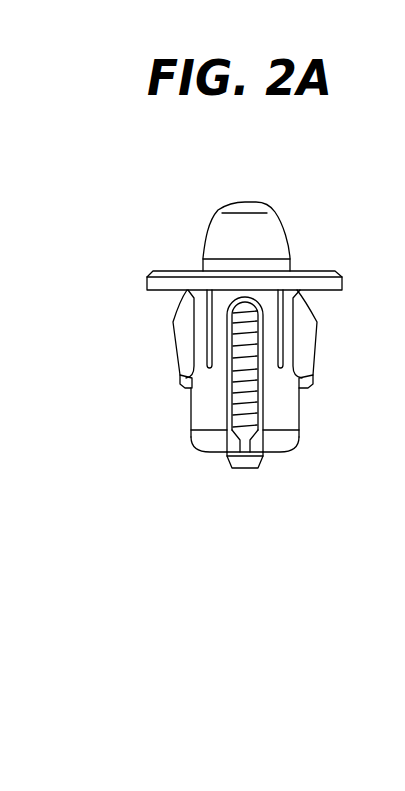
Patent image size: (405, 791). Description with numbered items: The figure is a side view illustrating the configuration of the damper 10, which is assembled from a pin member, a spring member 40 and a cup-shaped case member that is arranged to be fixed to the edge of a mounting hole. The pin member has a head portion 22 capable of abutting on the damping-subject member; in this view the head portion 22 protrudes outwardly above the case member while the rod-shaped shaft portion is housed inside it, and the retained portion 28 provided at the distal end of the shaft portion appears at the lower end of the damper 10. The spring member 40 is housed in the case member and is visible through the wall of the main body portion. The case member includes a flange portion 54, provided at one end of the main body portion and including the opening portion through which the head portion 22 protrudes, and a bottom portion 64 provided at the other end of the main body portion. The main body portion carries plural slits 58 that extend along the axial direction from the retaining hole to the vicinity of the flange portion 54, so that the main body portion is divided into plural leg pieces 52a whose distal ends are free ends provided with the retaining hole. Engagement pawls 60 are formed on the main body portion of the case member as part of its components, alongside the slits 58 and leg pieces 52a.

The damper 10 is at (270, 535).
The head portion 22 is at (216, 212).
The flange portion 54 is at (325, 282).
The engagement pawls 60 is at (174, 323).
The leg pieces 52a is at (178, 375).
The slits 58 is at (227, 392).
The bottom portion 64 is at (273, 455).
The retained portion 28 is at (244, 469).
The spring member 40 is at (241, 390).